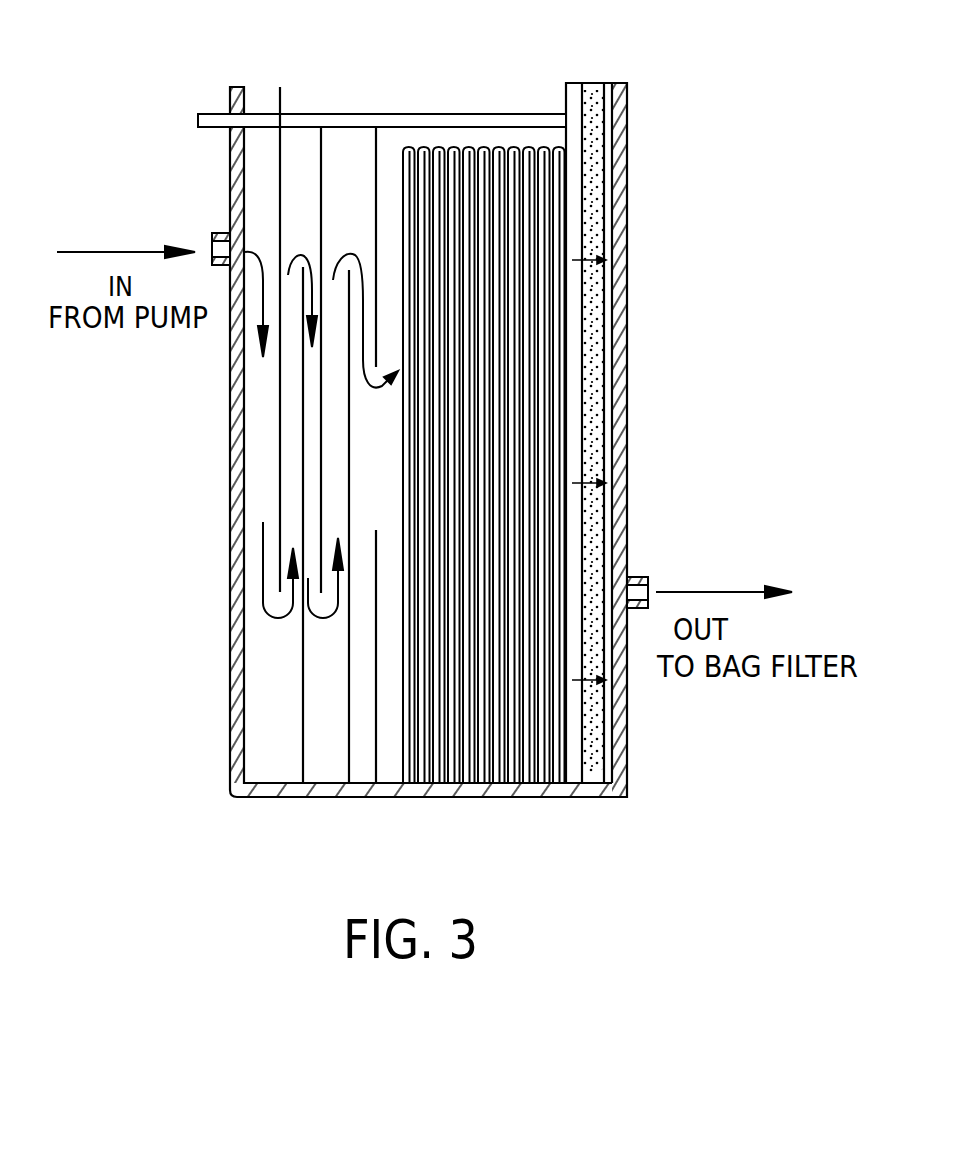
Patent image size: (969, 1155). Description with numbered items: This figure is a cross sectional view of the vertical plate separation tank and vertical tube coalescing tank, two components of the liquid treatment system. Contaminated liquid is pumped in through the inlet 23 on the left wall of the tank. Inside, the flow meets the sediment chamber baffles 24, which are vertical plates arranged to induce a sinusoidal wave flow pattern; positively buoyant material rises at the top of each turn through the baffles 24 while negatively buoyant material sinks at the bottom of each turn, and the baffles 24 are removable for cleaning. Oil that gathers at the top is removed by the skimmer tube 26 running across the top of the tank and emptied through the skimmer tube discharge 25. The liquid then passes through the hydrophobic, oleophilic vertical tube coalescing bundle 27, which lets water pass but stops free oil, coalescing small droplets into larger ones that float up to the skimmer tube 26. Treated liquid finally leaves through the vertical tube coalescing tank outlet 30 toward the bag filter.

The inlet 23 is at (215, 233).
The sediment chamber baffles 24 is at (375, 173).
The skimmer tube discharge 25 is at (198, 127).
The skimmer tube 26 is at (466, 118).
The vertical tube coalescing bundle 27 is at (522, 213).
The vertical tube coalescing tank outlet 30 is at (640, 577).